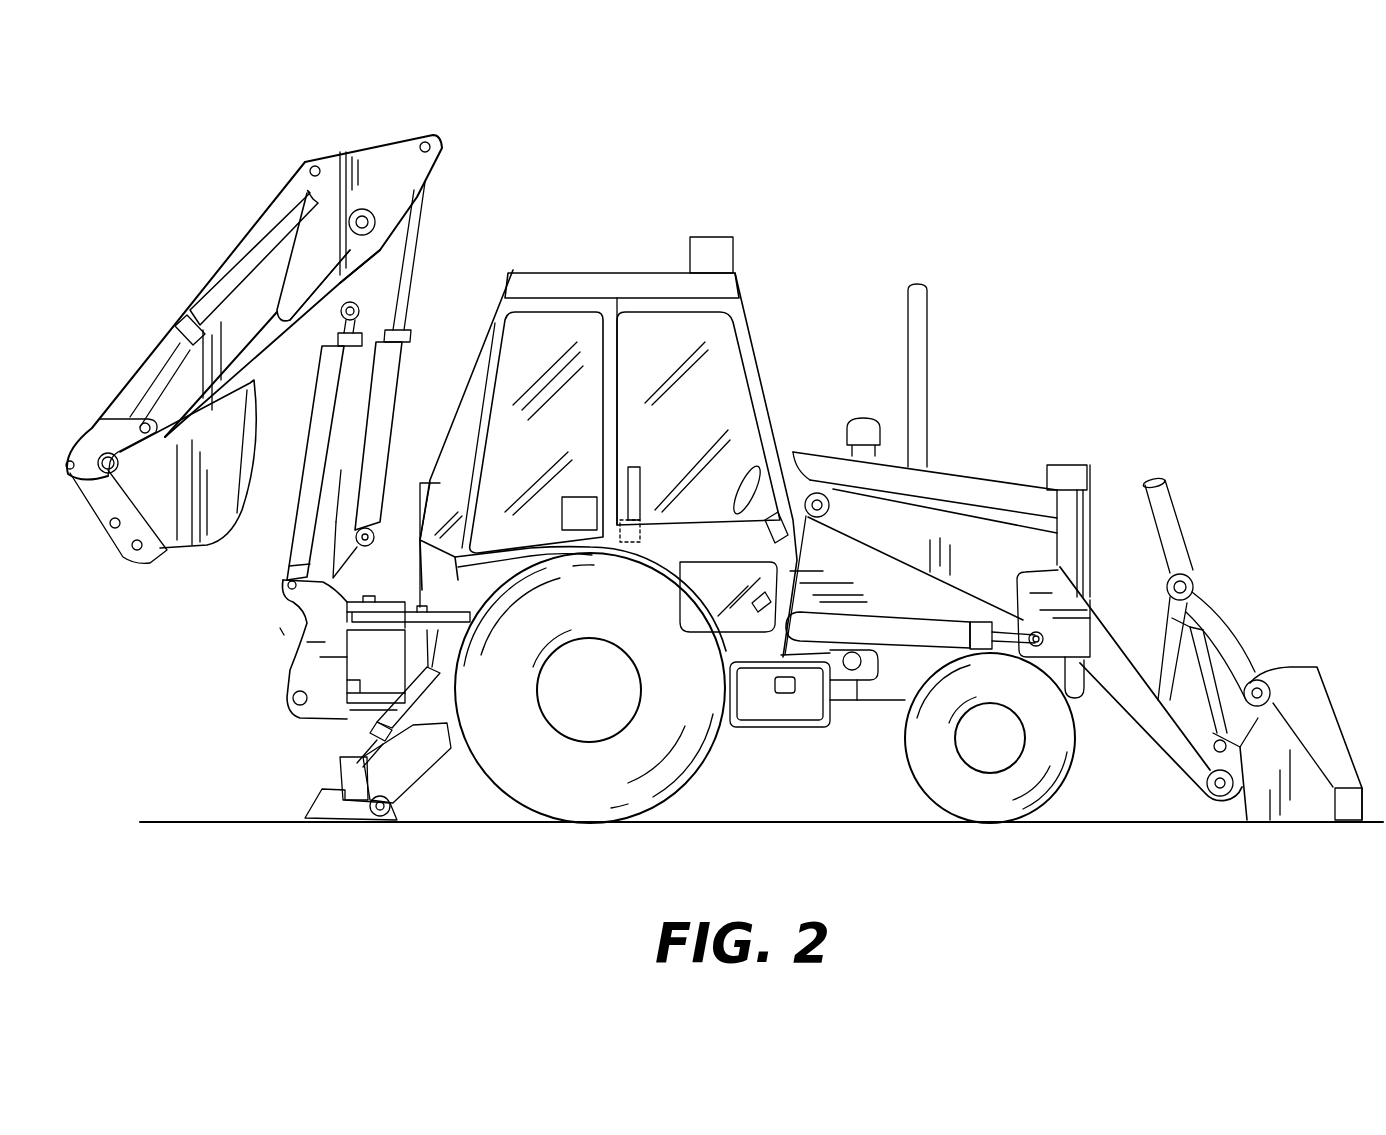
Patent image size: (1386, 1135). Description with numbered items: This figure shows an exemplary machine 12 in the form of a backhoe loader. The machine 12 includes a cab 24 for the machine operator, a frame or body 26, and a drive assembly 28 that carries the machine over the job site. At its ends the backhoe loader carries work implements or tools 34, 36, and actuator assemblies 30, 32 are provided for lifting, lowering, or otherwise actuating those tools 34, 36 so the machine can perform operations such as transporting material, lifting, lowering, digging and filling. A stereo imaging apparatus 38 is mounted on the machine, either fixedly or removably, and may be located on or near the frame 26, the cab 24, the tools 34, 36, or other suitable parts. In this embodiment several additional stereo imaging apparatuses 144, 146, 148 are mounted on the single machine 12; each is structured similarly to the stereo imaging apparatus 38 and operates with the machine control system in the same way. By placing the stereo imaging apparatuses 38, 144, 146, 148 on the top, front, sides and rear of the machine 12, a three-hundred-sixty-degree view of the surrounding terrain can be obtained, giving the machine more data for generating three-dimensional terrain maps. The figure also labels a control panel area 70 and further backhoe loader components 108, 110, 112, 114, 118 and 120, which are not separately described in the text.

The machine 12 is at (984, 448).
The cab 24 is at (752, 358).
The frame or body 26 is at (857, 683).
The drive assembly 28 is at (570, 797).
The actuator assembly 30 is at (903, 618).
The actuator assembly 32 is at (318, 448).
The work implement or tool 34 is at (200, 543).
The work implement or tool 36 is at (1269, 640).
The stereo imaging apparatus 38 is at (1075, 470).
The control panel 70 is at (728, 596).
The backhoe boom 108 is at (348, 124).
The swing bracket 110 is at (317, 617).
The dipper cylinder 112 is at (362, 283).
The dipper arm 114 is at (263, 293).
The bucket cylinder 118 is at (203, 302).
The stabilizer 120 is at (433, 781).
The stereo imaging apparatus 144 is at (432, 483).
The stereo imaging apparatus 146 is at (580, 500).
The stereo imaging apparatus 148 is at (712, 240).